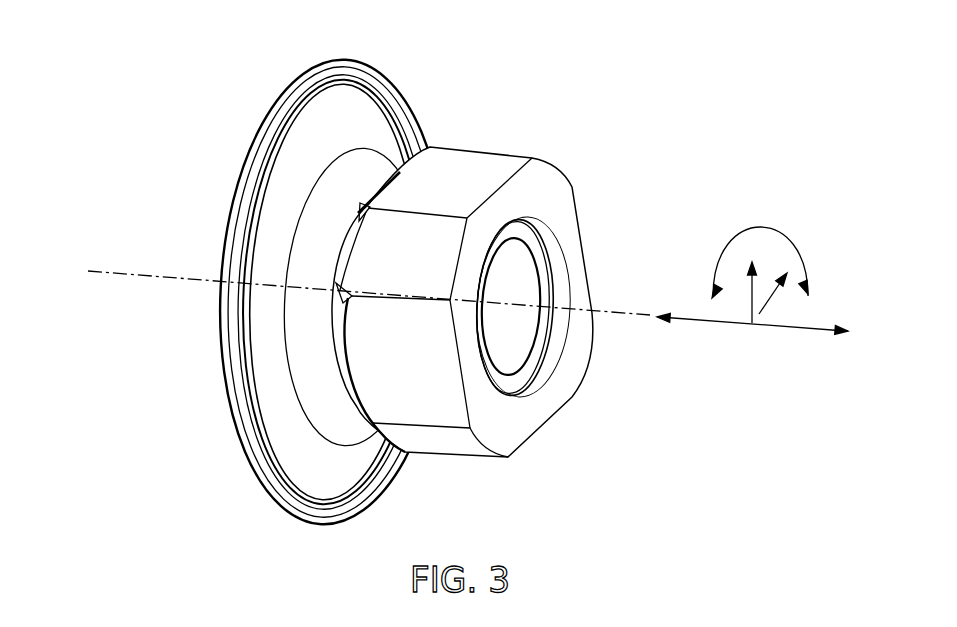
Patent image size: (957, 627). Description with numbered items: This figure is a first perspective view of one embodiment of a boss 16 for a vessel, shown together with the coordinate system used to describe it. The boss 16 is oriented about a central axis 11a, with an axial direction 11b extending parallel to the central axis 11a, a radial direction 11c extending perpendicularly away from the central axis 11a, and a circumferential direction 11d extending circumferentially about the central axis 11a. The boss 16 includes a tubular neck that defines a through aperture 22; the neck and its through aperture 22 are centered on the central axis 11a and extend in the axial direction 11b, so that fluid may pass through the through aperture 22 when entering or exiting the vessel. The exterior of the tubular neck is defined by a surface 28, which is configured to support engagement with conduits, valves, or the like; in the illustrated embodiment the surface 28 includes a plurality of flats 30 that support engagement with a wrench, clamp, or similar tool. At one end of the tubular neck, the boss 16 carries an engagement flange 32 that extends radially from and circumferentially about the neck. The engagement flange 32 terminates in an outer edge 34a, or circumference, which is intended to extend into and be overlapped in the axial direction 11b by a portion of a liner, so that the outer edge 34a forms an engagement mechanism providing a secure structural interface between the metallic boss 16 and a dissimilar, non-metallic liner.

The boss 16 is at (457, 280).
The through aperture 22 is at (506, 327).
The surface 28 is at (478, 303).
The flats 30 is at (428, 192).
The engagement flange 32 is at (334, 280).
The outer edge 34a is at (336, 68).
The central axis 11a is at (622, 313).
The axial direction 11b is at (818, 331).
The radial direction 11c is at (755, 292).
The circumferential direction 11d is at (763, 227).